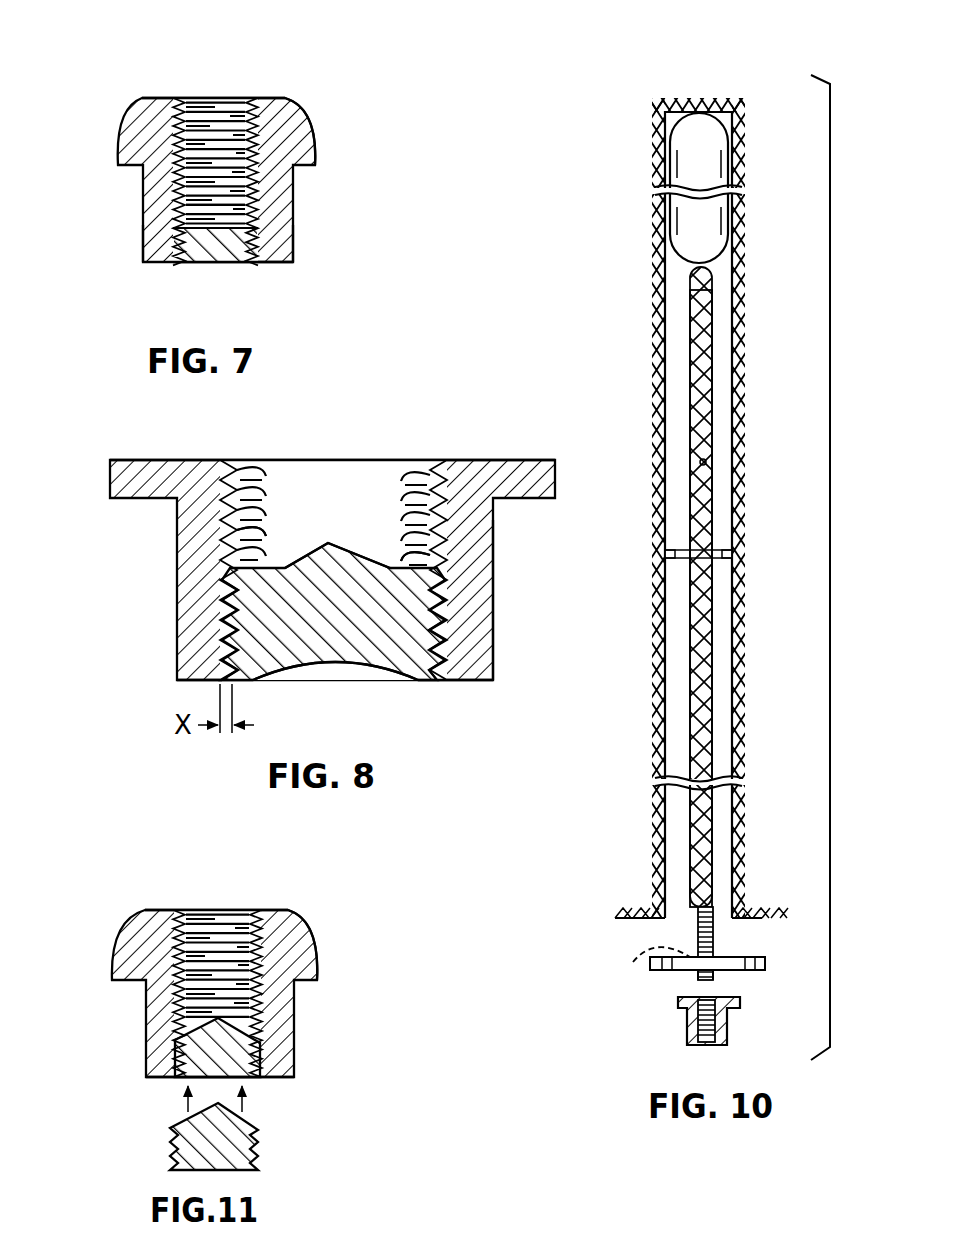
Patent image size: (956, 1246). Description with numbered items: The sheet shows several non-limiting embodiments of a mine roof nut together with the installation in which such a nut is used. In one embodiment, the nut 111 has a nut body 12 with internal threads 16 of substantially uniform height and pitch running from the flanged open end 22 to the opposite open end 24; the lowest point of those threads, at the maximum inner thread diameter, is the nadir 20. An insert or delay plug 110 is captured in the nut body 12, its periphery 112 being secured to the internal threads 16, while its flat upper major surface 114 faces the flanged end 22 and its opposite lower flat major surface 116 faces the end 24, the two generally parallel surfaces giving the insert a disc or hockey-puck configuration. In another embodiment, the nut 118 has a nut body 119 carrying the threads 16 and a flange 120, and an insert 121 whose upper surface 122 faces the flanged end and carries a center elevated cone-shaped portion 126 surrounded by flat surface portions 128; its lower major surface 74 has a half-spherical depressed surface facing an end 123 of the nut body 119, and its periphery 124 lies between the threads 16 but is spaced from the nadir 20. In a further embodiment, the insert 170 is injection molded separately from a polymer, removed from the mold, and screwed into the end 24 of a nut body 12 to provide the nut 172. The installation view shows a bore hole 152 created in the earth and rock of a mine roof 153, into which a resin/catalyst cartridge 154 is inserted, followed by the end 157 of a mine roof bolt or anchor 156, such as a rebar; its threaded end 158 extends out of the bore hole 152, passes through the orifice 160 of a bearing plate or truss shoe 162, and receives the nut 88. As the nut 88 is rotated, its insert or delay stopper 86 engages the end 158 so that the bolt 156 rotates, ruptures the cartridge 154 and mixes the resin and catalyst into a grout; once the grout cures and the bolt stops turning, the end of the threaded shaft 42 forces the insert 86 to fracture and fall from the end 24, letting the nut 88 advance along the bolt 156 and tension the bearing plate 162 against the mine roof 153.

In FIG. 7, the nut body 12 is at (286, 86).
In FIG. 11, the nut body 12 is at (168, 905).
In FIG. 7, the internal threads 16 is at (222, 108).
In FIG. 8, the internal threads 16 is at (255, 472).
In FIG. 8, the nadir 20 is at (230, 600).
In FIG. 7, the flanged open end 22 is at (312, 128).
In FIG. 11, the flanged open end 22 is at (306, 935).
In FIG. 7, the opposite open end 24 is at (294, 262).
In FIG. 11, the opposite open end 24 is at (286, 1078).
In FIG. 10, the threaded shaft 42 is at (700, 976).
In FIG. 8, the lower major surface 74 is at (328, 664).
In FIG. 10, the insert or delay stopper 86 is at (712, 1046).
In FIG. 10, the nut 88 is at (684, 1025).
In FIG. 7, the insert or delay plug 110 is at (216, 259).
In FIG. 7, the nut 111 is at (182, 88).
In FIG. 7, the periphery 112 is at (262, 233).
In FIG. 7, the flat upper major surface 114 is at (178, 208).
In FIG. 7, the lower flat major surface 116 is at (240, 262).
In FIG. 8, the nut 118 is at (498, 688).
In FIG. 8, the nut body 119 is at (495, 586).
In FIG. 8, the flange 120 is at (142, 460).
In FIG. 8, the insert 121 is at (420, 682).
In FIG. 8, the upper surface 122 is at (360, 545).
In FIG. 8, the end 123 is at (190, 682).
In FIG. 8, the periphery 124 is at (225, 660).
In FIG. 8, the center elevated cone-shaped portion 126 is at (326, 541).
In FIG. 8, the flat surface portions 128 is at (235, 540).
In FIG. 10, the bore hole 152 is at (706, 462).
In FIG. 10, the mine roof 153 is at (640, 920).
In FIG. 10, the resin/catalyst cartridge 154 is at (707, 232).
In FIG. 10, the mine roof bolt or anchor 156 is at (703, 380).
In FIG. 10, the end 157 is at (738, 287).
In FIG. 10, the threaded end 158 is at (730, 937).
In FIG. 10, the orifice 160 is at (632, 962).
In FIG. 10, the bearing plate or truss shoe 162 is at (765, 963).
In FIG. 11, the insert 170 is at (255, 1027).
In FIG. 11, the nut 172 is at (250, 903).